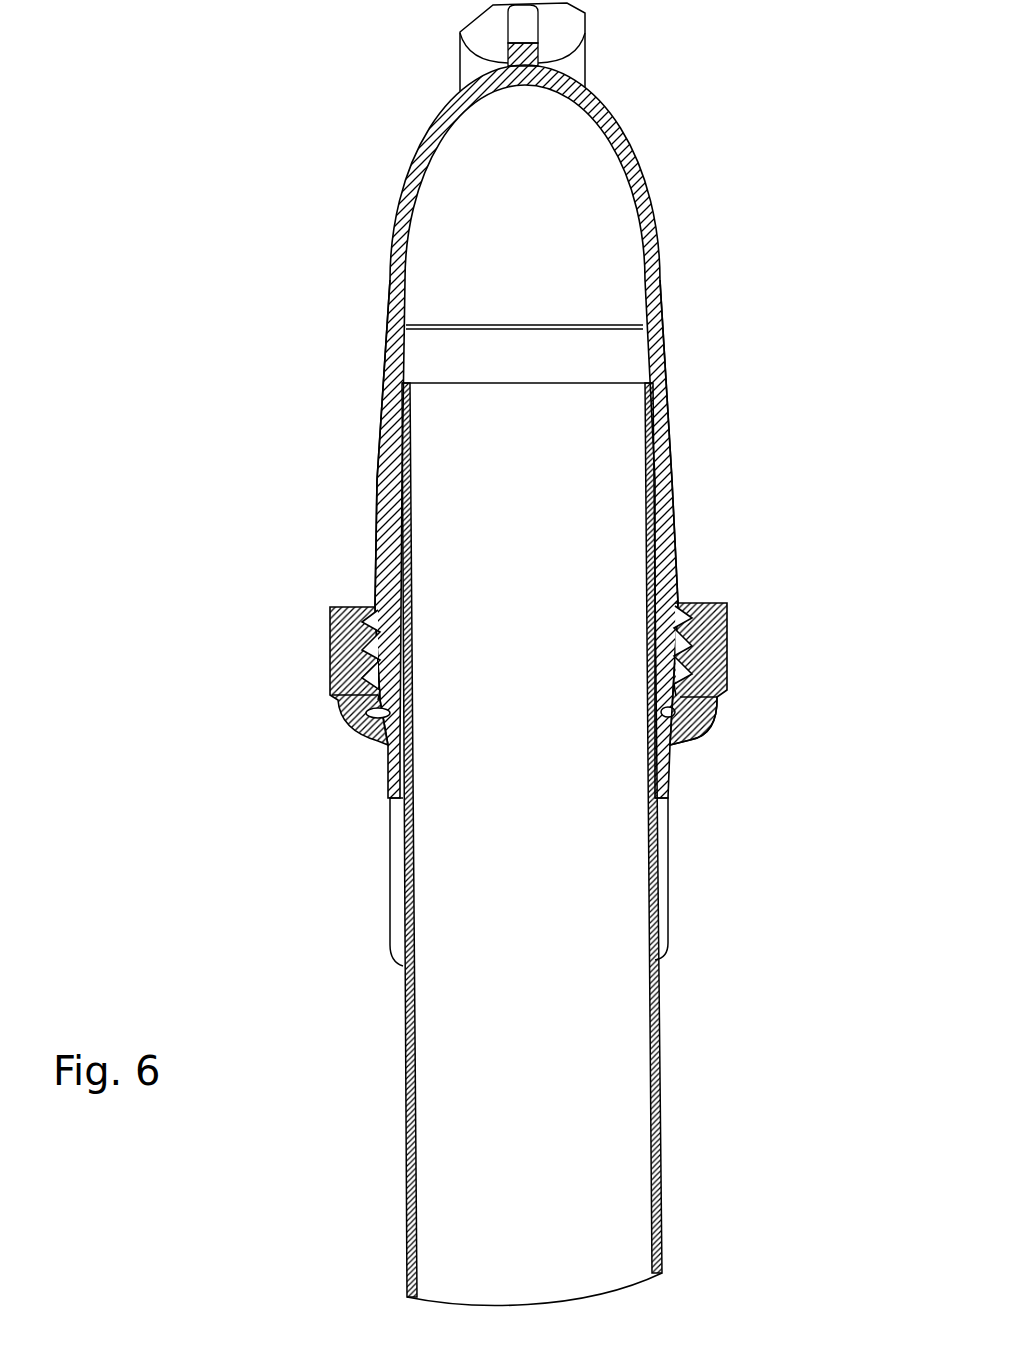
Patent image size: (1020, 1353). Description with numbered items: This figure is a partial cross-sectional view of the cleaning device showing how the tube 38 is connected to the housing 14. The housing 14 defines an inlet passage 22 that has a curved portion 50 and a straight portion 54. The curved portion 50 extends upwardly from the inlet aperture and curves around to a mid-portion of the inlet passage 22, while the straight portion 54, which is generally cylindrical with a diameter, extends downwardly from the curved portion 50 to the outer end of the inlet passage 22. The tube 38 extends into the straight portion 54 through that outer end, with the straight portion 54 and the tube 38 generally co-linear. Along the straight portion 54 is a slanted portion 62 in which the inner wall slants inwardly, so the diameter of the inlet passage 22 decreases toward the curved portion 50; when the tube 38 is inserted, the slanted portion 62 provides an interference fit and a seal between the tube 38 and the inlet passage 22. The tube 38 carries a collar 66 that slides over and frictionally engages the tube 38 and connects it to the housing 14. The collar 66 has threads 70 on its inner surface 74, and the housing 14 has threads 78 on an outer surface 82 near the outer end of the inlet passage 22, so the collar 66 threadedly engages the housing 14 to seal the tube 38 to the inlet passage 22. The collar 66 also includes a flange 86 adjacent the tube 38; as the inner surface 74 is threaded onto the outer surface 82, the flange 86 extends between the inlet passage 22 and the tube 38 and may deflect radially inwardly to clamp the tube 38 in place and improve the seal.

The housing 14 is at (654, 216).
The curved portion 50 is at (606, 99).
The slanted portion 62 is at (383, 374).
The inlet passage 22 is at (673, 433).
The straight portion 54 is at (676, 515).
The tube 38 is at (658, 982).
The inner surface 74 is at (381, 598).
The threads 70 is at (397, 662).
The flange 86 is at (402, 710).
The threads 78 is at (690, 647).
The outer surface 82 is at (697, 695).
The collar 66 is at (700, 727).